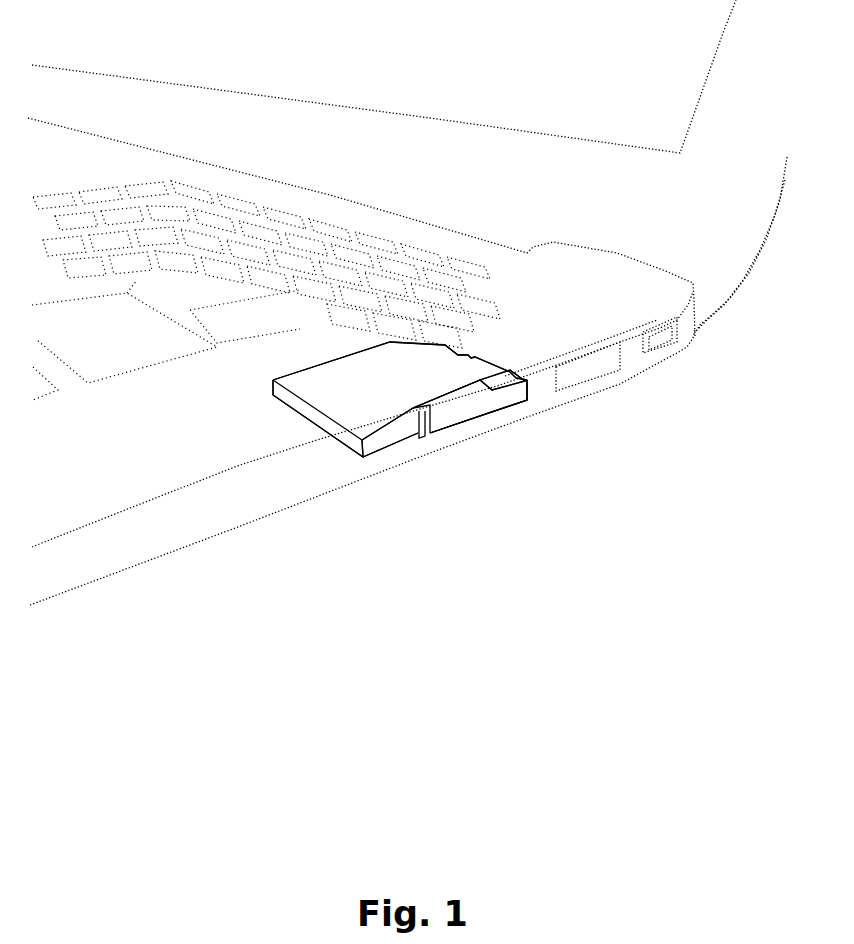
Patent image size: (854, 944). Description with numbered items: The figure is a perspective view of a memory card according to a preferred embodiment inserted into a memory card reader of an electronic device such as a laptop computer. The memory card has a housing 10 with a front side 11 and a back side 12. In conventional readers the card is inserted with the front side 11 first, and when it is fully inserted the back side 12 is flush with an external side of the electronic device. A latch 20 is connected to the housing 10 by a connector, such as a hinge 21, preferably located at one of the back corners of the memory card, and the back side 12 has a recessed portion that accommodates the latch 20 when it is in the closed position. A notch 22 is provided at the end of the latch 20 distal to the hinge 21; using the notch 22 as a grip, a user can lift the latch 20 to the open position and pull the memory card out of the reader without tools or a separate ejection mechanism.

The housing 10 is at (393, 380).
The front side 11 is at (313, 363).
The back side 12 is at (378, 445).
The latch 20 is at (454, 415).
The hinge 21 is at (502, 383).
The notch 22 is at (428, 407).